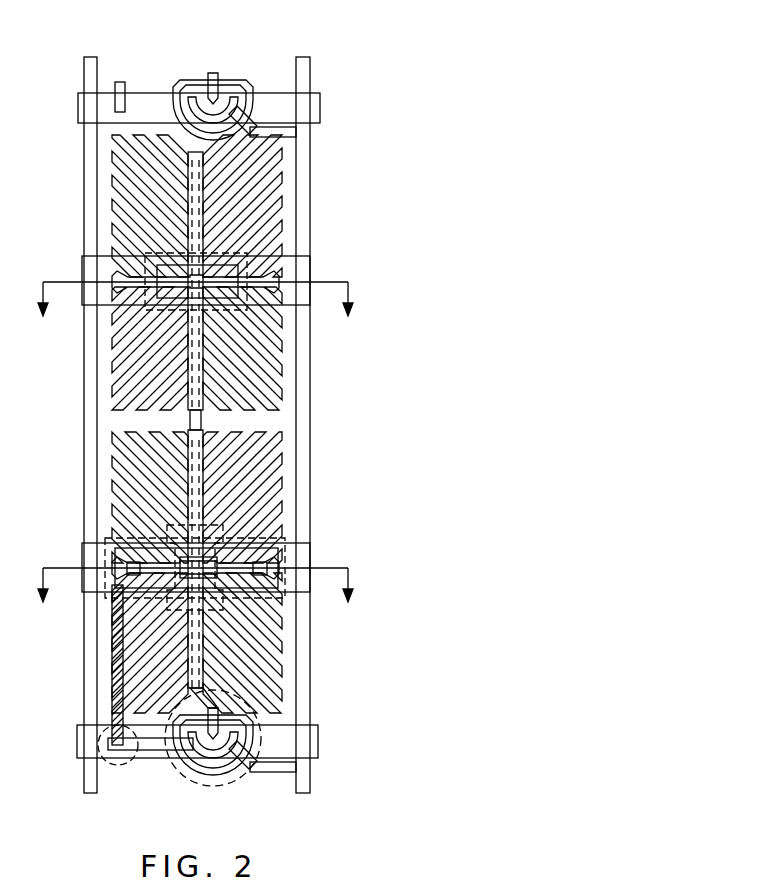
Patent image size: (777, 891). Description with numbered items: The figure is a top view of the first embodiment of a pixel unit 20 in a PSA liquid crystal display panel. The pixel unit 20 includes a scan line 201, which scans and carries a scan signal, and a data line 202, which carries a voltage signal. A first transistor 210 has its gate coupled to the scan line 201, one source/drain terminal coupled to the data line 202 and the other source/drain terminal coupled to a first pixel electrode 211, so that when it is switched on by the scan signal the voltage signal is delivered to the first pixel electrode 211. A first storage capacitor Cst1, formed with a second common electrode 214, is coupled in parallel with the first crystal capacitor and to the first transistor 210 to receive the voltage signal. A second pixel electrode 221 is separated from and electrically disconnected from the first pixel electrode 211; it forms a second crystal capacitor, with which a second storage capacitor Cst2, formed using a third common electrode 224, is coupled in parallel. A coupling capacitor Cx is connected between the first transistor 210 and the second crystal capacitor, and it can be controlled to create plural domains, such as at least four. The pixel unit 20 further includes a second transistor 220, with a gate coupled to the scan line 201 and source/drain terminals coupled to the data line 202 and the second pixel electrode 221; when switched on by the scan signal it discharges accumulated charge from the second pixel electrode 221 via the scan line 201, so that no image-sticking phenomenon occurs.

The pixel unit 20 is at (368, 78).
The scan line 201 is at (77, 741).
The data line 202 is at (310, 697).
The first transistor 210 is at (228, 785).
The first pixel electrode 211 is at (278, 199).
The second common electrode 214 is at (310, 263).
The second transistor 220 is at (110, 765).
The second pixel electrode 221 is at (276, 440).
The third common electrode 224 is at (300, 552).
The first storage capacitor Cst1 is at (247, 256).
The second storage capacitor Cst2 is at (285, 541).
The coupling capacitor Cx is at (222, 527).